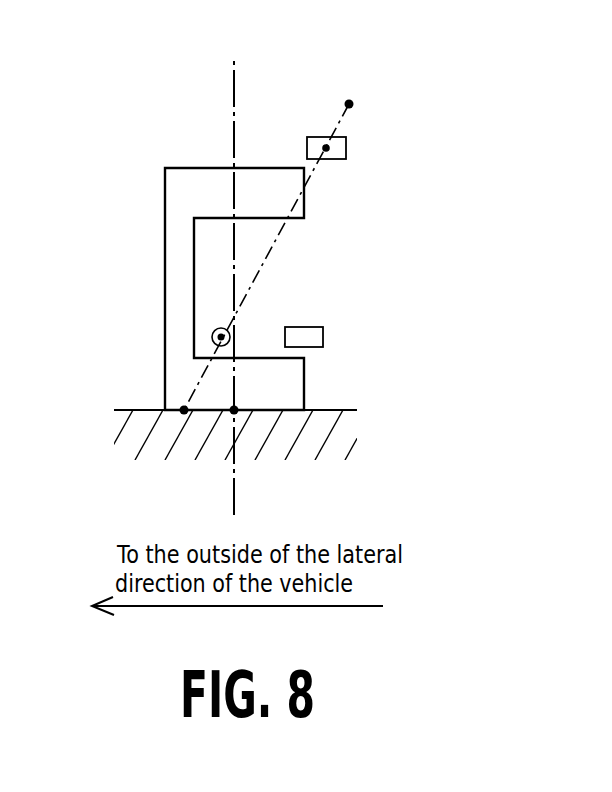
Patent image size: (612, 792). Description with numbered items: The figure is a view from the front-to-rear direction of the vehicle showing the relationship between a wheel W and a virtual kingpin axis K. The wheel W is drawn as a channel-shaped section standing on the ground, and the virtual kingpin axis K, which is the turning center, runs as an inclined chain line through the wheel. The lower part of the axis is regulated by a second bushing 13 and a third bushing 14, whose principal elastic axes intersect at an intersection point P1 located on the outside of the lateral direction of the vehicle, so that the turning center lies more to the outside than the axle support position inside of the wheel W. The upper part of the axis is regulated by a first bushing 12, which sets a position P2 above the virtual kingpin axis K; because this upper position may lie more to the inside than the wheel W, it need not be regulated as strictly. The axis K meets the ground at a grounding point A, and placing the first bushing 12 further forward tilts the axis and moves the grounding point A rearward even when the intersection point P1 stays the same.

The first bushing 12 is at (316, 137).
The second bushing 13 is at (358, 333).
The third bushing 14 is at (323, 337).
The wheel W is at (165, 199).
The virtual kingpin axis K is at (268, 253).
The grounding point A is at (186, 412).
The intersection point P1 is at (231, 337).
The position above virtual kingpin axis P2 is at (326, 148).